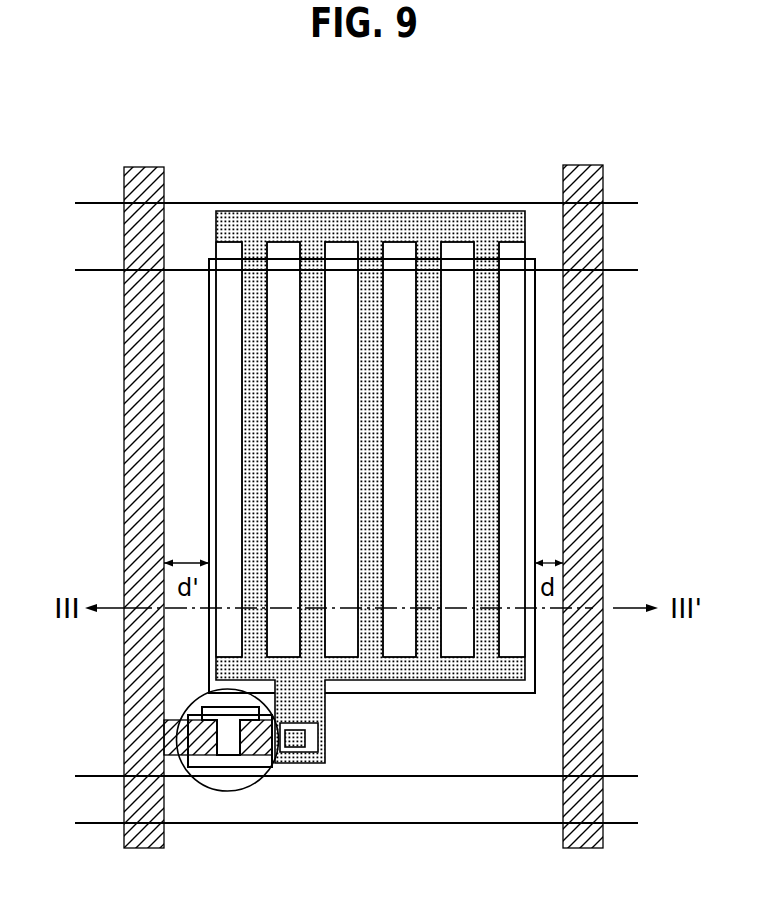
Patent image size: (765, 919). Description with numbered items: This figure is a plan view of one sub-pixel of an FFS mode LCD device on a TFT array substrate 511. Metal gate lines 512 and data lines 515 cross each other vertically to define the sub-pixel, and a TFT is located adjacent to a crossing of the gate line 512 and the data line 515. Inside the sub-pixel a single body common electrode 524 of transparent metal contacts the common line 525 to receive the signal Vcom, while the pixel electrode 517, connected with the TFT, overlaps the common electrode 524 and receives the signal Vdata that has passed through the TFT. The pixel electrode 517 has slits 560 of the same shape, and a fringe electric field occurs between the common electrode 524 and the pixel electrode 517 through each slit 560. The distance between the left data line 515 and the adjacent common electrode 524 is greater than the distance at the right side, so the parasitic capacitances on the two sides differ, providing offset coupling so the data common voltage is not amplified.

The TFT array substrate 511 is at (534, 104).
The gate line 512 is at (453, 803).
The data line 515 is at (137, 457).
The pixel electrode 517 is at (430, 470).
The single body common electrode 524 is at (537, 523).
The common line 525 is at (193, 218).
The slit 560 is at (342, 360).
The thin film transistor TFT is at (229, 792).